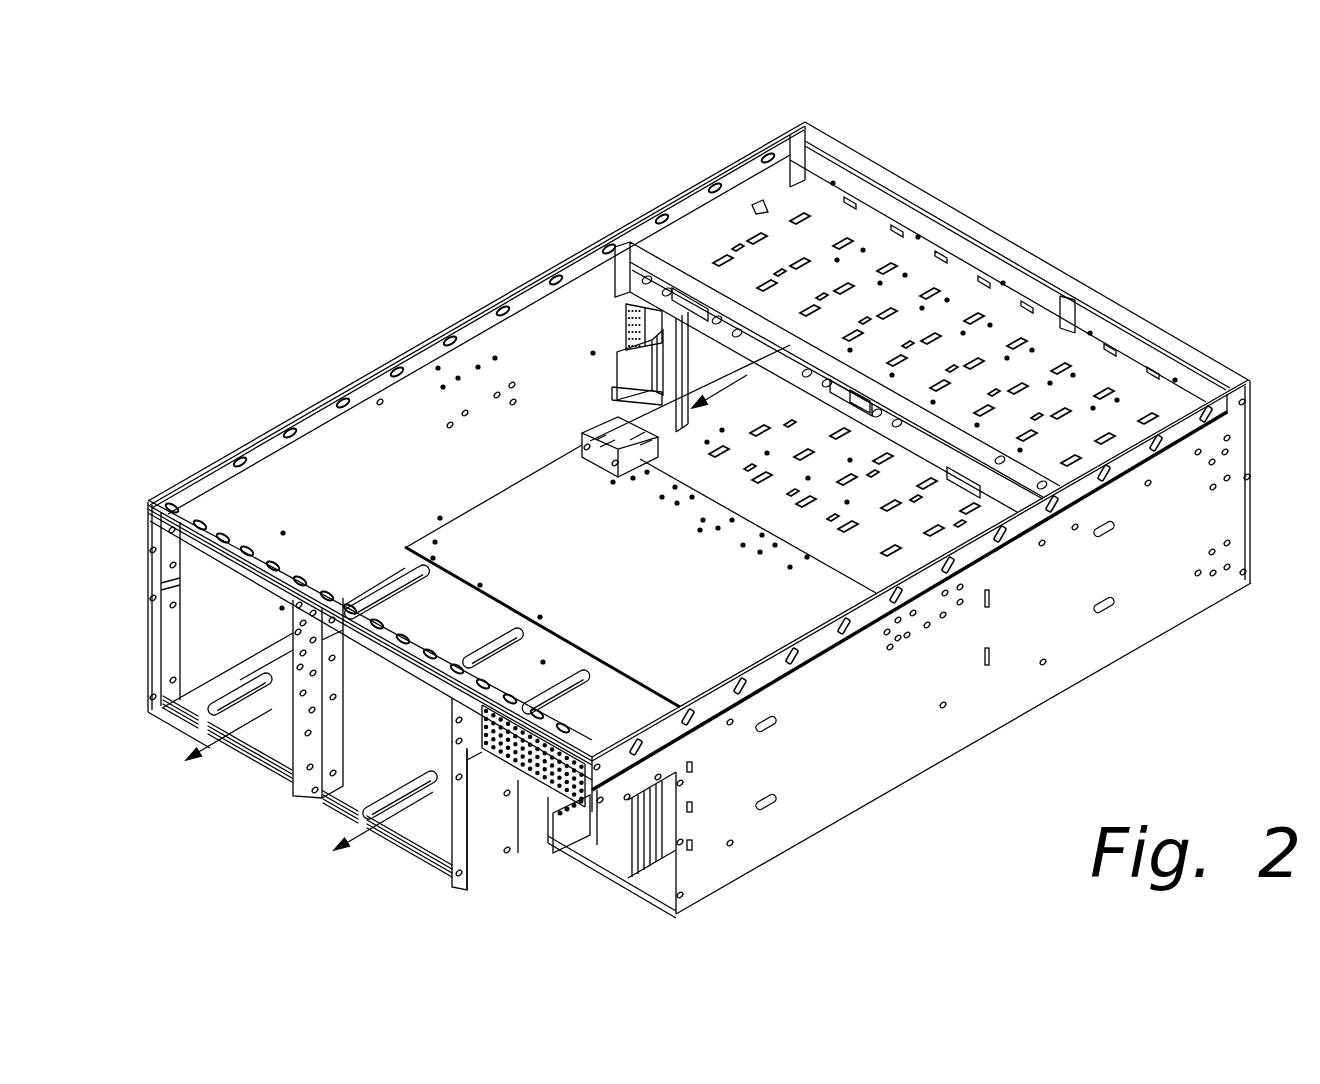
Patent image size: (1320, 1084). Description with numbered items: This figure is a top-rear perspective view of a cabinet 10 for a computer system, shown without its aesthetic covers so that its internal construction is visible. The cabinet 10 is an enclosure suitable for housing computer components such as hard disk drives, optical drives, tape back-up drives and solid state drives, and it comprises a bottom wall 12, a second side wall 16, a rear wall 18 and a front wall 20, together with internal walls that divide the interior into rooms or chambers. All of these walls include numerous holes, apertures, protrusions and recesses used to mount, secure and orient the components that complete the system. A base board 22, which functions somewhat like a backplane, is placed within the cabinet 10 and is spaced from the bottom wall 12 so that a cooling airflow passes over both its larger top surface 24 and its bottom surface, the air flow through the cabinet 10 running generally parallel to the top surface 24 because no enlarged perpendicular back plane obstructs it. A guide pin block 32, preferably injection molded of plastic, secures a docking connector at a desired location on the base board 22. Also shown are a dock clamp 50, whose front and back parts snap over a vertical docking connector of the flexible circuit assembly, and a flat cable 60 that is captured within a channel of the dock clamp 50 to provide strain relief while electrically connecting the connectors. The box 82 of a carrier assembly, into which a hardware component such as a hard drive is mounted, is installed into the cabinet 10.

The cabinet 10 is at (1128, 262).
The bottom wall 12 is at (462, 630).
The second side wall 16 is at (880, 746).
The rear wall 18 is at (362, 518).
The front wall 20 is at (937, 232).
The base board 22 is at (503, 533).
The top surface 24 is at (692, 634).
The guide pin block 32 is at (613, 470).
The dock clamp 50 is at (612, 403).
The flat cable 60 is at (624, 320).
The box 82 is at (688, 420).